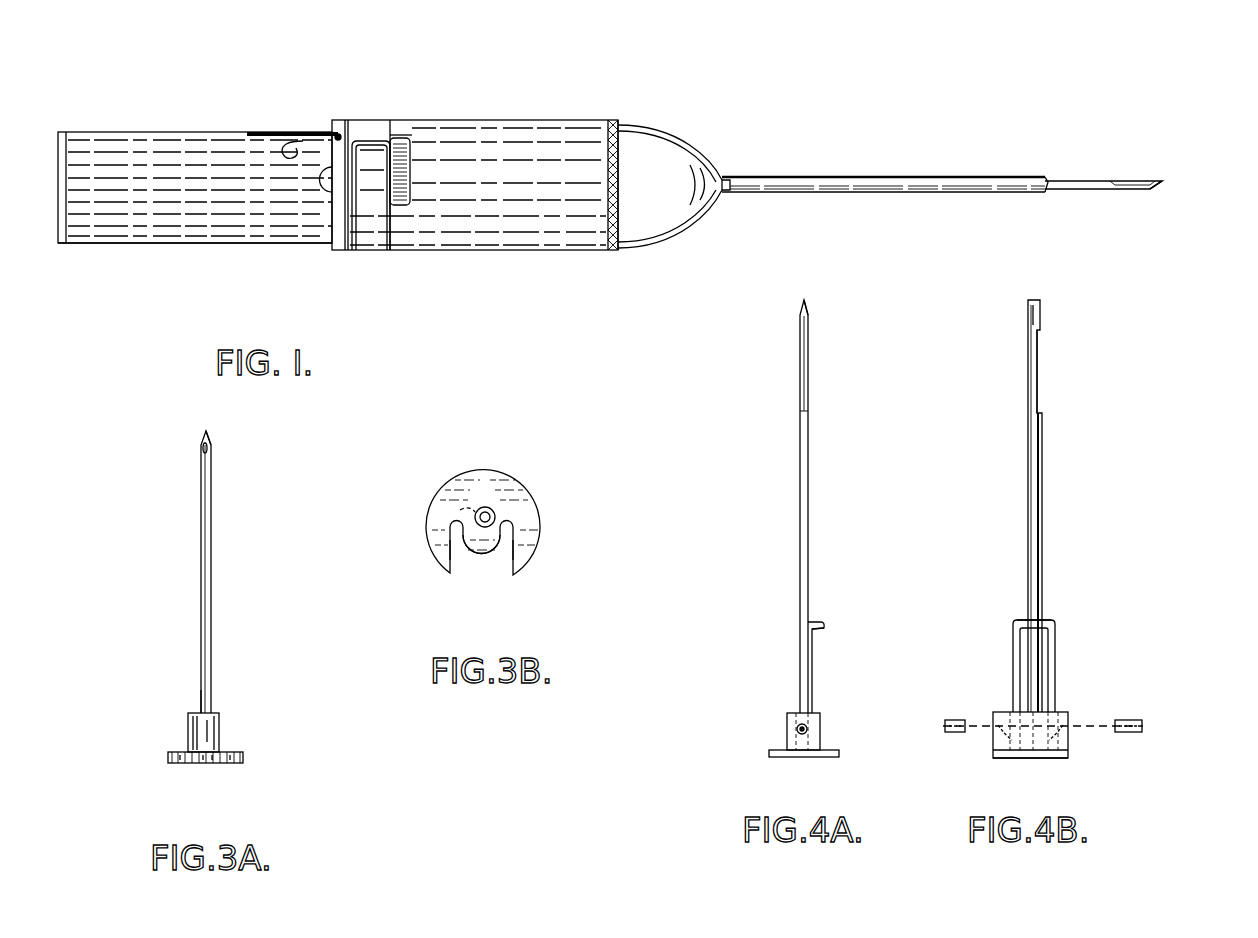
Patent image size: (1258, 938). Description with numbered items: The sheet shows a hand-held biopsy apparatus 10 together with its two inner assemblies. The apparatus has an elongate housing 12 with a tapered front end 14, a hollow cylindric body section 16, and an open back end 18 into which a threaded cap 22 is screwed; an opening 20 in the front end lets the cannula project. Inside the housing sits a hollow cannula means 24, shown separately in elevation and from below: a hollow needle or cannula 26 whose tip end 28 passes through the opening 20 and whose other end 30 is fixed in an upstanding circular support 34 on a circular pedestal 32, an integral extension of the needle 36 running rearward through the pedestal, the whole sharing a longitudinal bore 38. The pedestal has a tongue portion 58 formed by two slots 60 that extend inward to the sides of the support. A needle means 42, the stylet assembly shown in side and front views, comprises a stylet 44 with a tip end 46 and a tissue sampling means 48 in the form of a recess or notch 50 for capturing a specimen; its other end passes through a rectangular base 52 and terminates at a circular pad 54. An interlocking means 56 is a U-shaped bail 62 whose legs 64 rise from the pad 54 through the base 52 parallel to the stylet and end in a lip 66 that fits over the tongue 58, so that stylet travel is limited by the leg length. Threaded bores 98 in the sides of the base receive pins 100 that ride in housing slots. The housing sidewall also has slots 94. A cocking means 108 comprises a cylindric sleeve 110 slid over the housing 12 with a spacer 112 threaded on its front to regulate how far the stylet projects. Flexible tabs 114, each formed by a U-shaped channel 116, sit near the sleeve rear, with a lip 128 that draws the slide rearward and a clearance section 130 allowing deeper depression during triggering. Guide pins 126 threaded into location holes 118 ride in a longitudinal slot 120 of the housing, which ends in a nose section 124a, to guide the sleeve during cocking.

In FIG. 1, the biopsy apparatus 10 is at (545, 33).
In FIG. 1, the elongate housing 12 is at (270, 30).
In FIG. 1, the tapered front end 14 is at (742, 115).
In FIG. 1, the cylindric body section 16 is at (262, 247).
In FIG. 1, the open back end 18 is at (88, 250).
In FIG. 1, the opening 20 is at (730, 192).
In FIG. 1, the threaded cap 22 is at (97, 90).
In FIG. 3A, the hollow cannula means 24 is at (140, 590).
In FIG. 3B, the hollow cannula means 24 is at (585, 470).
In FIG. 1, the hollow needle or cannula 26 is at (900, 138).
In FIG. 3A, the hollow needle or cannula 26 is at (201, 632).
In FIG. 1, the tip end 28 is at (1043, 177).
In FIG. 3A, the tip end 28 is at (210, 438).
In FIG. 3A, the other end 30 is at (201, 690).
In FIG. 3A, the circular pedestal 32 is at (166, 757).
In FIG. 3B, the circular pedestal 32 is at (537, 435).
In FIG. 3A, the circular support 34 is at (222, 720).
In FIG. 3B, the circular support 34 is at (470, 508).
In FIG. 3A, the extension of the needle 36 is at (203, 764).
In FIG. 3B, the extension of the needle 36 is at (480, 507).
In FIG. 3A, the longitudinal bore 38 is at (201, 440).
In FIG. 3B, the longitudinal bore 38 is at (502, 511).
In FIG. 4A, the needle means 42 is at (735, 543).
In FIG. 4B, the needle means 42 is at (1150, 515).
In FIG. 1, the stylet 44 is at (1122, 192).
In FIG. 4A, the stylet 44 is at (797, 468).
In FIG. 4B, the stylet 44 is at (1025, 473).
In FIG. 1, the tip end 46 is at (1160, 181).
In FIG. 4A, the tip end 46 is at (806, 300).
In FIG. 4B, the tip end 46 is at (1040, 302).
In FIG. 4B, the tissue sampling means 48 is at (1075, 385).
In FIG. 1, the recess or notch 50 is at (1090, 180).
In FIG. 4B, the recess or notch 50 is at (1040, 362).
In FIG. 4A, the base 52 is at (815, 712).
In FIG. 4B, the base 52 is at (1008, 712).
In FIG. 4A, the pad 54 is at (785, 758).
In FIG. 4B, the pad 54 is at (1032, 760).
In FIG. 4A, the interlocking means 56 is at (828, 660).
In FIG. 4B, the interlocking means 56 is at (1078, 683).
In FIG. 3A, the tongue portion 58 is at (215, 764).
In FIG. 3B, the tongue portion 58 is at (480, 560).
In FIG. 3A, the slots 60 is at (178, 764).
In FIG. 3B, the slots 60 is at (437, 555).
In FIG. 4A, the bail 62 is at (840, 612).
In FIG. 4B, the bail 62 is at (1082, 622).
In FIG. 4A, the legs 64 is at (806, 660).
In FIG. 4B, the legs 64 is at (1013, 648).
In FIG. 4A, the lip 66 is at (826, 625).
In FIG. 4B, the lip 66 is at (1045, 615).
In FIG. 1, the slots 94 is at (325, 195).
In FIG. 4A, the threaded bores 98 is at (797, 730).
In FIG. 4B, the threaded bores 98 is at (995, 735).
In FIG. 4B, the pins 100 is at (945, 727).
In FIG. 1, the cocking means 108 is at (548, 295).
In FIG. 1, the cylindric sleeve 110 is at (540, 252).
In FIG. 1, the spacer 112 is at (612, 250).
In FIG. 1, the flexible tabs 114 is at (375, 250).
In FIG. 1, the U-shaped channel 116 is at (400, 240).
In FIG. 1, the threaded location holes 118 is at (352, 145).
In FIG. 1, the longitudinal slot 120 is at (310, 133).
In FIG. 1, the nose section 124a is at (256, 130).
In FIG. 1, the guide pins 126 is at (343, 136).
In FIG. 1, the lip 128 is at (406, 142).
In FIG. 1, the clearance section 130 is at (418, 172).